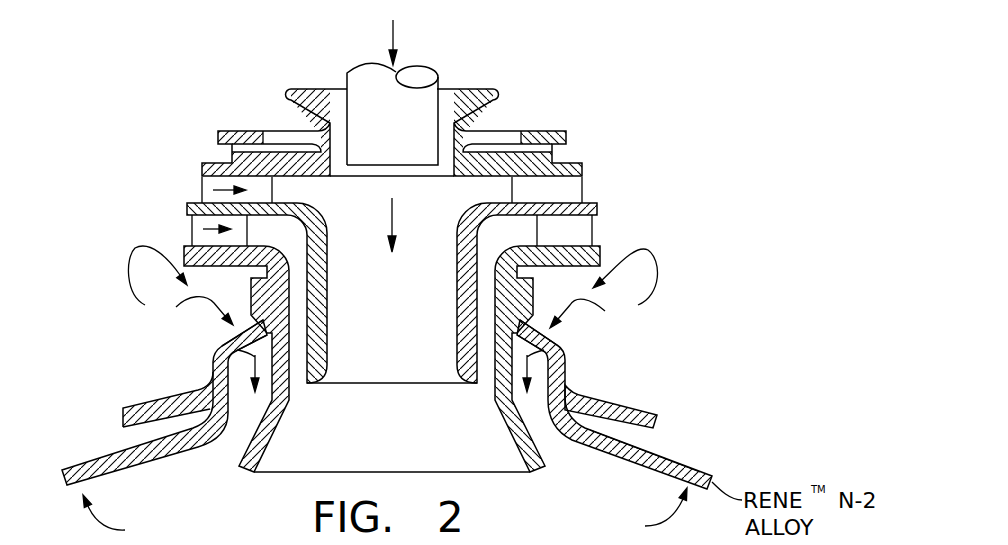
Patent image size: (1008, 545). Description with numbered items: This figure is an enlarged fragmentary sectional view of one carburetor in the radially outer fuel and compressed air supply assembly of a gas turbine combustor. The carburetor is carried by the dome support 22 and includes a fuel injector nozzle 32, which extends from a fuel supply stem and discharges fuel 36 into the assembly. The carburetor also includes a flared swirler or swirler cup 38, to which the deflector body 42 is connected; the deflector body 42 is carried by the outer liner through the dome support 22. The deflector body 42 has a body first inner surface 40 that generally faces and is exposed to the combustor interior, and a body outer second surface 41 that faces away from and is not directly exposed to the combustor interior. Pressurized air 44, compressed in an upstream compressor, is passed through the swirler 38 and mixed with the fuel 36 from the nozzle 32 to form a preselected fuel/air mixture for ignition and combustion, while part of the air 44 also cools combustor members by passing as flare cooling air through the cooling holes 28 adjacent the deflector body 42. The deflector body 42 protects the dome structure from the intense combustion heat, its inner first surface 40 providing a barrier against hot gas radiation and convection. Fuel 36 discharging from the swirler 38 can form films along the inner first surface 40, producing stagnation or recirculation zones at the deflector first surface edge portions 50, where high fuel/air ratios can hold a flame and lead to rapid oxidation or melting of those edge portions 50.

The dome support 22 is at (168, 402).
The cooling holes 28 is at (224, 343).
The fuel injector nozzle 32 is at (347, 85).
The fuel 36 is at (392, 33).
The flared swirler or swirler cup 38 is at (402, 444).
The body first inner surface 40 is at (578, 89).
The body outer second surface 41 is at (647, 447).
The deflector body 42 is at (118, 458).
The pressurized air 44 is at (200, 229).
The deflector first surface edge portions 50 is at (385, 515).